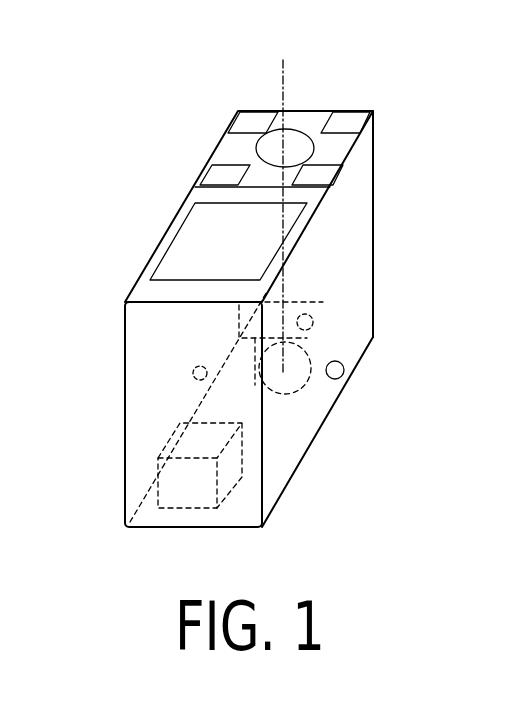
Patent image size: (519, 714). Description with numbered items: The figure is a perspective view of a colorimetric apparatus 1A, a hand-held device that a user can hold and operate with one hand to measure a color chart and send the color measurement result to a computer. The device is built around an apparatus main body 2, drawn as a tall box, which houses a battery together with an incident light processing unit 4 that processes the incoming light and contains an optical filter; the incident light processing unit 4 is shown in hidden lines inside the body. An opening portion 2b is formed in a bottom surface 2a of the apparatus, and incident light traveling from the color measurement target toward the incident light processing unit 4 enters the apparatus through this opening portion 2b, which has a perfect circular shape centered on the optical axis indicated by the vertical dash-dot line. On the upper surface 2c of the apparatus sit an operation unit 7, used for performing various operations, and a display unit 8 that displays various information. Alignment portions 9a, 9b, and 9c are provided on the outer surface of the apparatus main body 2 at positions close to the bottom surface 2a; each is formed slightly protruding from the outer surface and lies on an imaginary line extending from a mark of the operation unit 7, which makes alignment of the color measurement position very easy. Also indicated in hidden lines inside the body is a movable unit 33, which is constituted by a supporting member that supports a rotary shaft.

The colorimetric apparatus 1A is at (152, 80).
The apparatus main body 2 is at (375, 173).
The bottom surface 2a is at (330, 415).
The opening portion 2b is at (316, 445).
The upper surface 2c is at (190, 193).
The incident light processing unit 4 is at (314, 322).
The operation unit 7 is at (228, 145).
The display unit 8 is at (183, 253).
The alignment portion 9a is at (305, 312).
The alignment portion 9b is at (344, 370).
The alignment portion 9c is at (193, 368).
The movable unit 33 is at (170, 445).